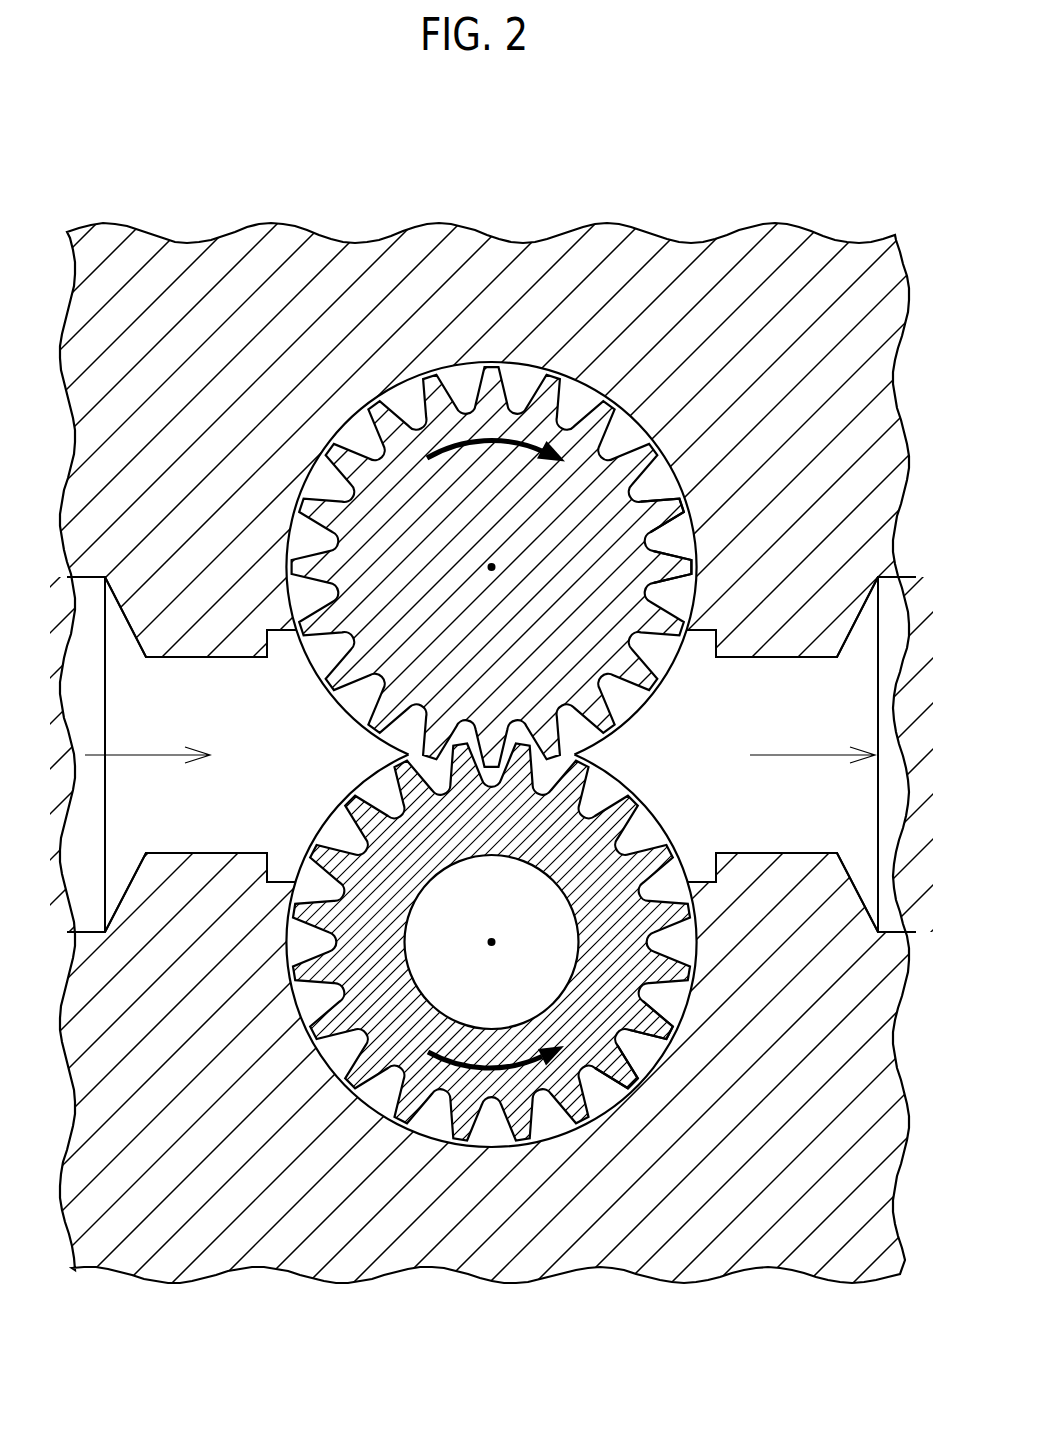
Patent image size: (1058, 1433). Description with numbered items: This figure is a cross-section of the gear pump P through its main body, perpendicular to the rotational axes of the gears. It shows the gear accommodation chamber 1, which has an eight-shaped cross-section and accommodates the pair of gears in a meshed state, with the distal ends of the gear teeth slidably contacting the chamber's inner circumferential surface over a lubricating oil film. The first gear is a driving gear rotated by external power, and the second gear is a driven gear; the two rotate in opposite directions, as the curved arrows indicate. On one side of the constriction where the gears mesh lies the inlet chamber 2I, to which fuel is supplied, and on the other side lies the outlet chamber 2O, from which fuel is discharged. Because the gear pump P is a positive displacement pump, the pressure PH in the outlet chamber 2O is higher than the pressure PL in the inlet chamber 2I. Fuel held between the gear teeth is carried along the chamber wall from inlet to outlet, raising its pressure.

The gear pump P is at (524, 206).
The gear accommodation chamber 1 is at (635, 413).
The inlet chamber 2I is at (223, 712).
The outlet chamber 2O is at (798, 712).
The pressure in the inlet chamber PL is at (151, 773).
The pressure in the outlet chamber PH is at (812, 773).